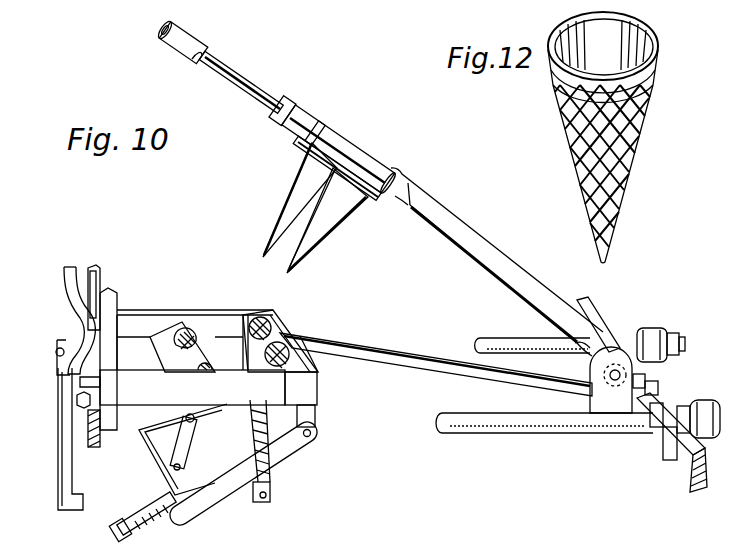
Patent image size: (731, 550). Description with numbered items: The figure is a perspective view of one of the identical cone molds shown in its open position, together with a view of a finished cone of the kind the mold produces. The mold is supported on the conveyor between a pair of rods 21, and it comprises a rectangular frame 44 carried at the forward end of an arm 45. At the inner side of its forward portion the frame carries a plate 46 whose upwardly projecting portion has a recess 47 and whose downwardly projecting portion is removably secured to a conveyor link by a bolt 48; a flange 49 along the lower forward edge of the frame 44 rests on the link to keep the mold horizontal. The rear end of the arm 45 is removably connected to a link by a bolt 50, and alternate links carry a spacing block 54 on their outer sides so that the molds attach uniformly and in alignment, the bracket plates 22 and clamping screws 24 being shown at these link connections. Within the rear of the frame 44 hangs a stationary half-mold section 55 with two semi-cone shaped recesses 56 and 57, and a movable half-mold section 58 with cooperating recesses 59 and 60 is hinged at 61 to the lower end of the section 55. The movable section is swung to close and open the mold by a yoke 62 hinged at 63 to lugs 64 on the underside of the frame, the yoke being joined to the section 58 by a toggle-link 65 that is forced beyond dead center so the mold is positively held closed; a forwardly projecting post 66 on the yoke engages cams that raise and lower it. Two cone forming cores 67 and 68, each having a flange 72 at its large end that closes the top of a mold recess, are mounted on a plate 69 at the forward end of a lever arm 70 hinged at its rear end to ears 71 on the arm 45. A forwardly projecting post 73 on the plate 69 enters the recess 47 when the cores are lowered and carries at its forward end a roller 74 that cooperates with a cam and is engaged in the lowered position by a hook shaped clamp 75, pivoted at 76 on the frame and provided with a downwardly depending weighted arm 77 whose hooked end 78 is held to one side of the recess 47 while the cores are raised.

The rods 21 is at (507, 332).
The bracket plate 22 is at (100, 440).
The clamping screw 24 is at (645, 334).
The rectangular frame 44 is at (188, 309).
The arm 45 is at (410, 348).
The plate 46 is at (113, 313).
The recess 47 is at (100, 284).
The bolt 48 is at (76, 402).
The flange 49 is at (84, 382).
The bolt 50 is at (660, 386).
The spacing block 54 is at (647, 383).
The stationary half-mold section 55 is at (282, 330).
The semi-cone shaped recess 56 is at (298, 340).
The semi-cone shaped recess 57 is at (277, 311).
The movable half-mold section 58 is at (167, 358).
The semi-cone shaped recess 59 is at (211, 368).
The semi-cone shaped recess 60 is at (190, 332).
The hinge 61 is at (272, 497).
The yoke 62 is at (290, 455).
The hinge connection 63 is at (312, 436).
The lugs 64 is at (317, 418).
The toggle-link 65 is at (184, 452).
The post 66 is at (152, 512).
The cone forming core 67 is at (342, 210).
The cone forming core 68 is at (302, 190).
The plate 69 is at (347, 155).
The lever arm 70 is at (473, 245).
The ears 71 is at (614, 381).
The flange 72 is at (318, 160).
The post 73 is at (237, 82).
The roller 74 is at (190, 52).
The hook shaped clamp 75 is at (70, 306).
The pivot 76 is at (56, 353).
The weighted arm 77 is at (62, 477).
The hook tip 78 is at (72, 266).